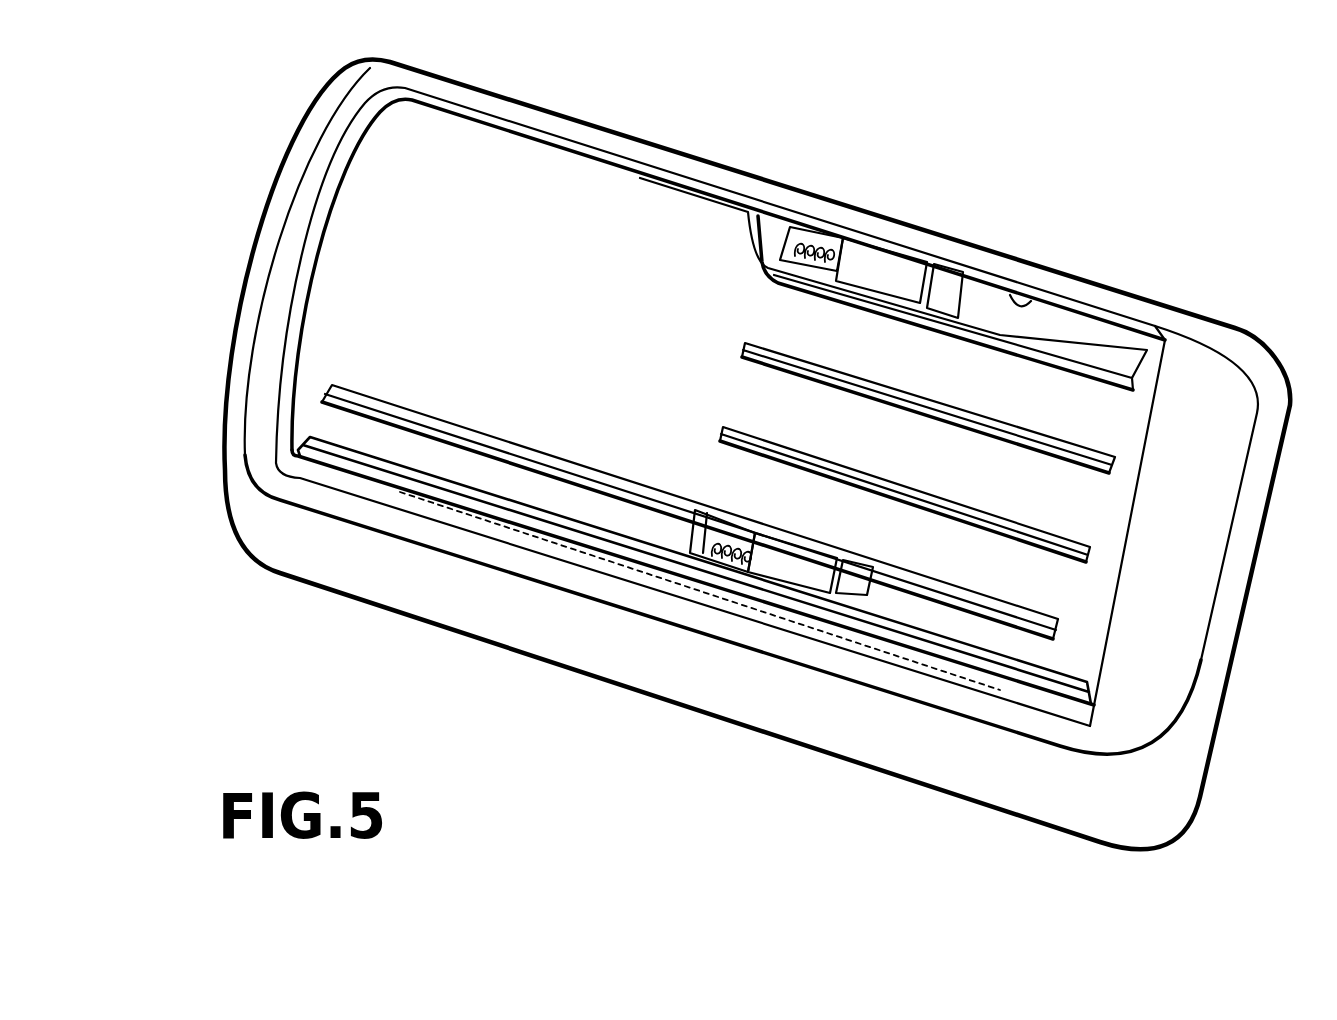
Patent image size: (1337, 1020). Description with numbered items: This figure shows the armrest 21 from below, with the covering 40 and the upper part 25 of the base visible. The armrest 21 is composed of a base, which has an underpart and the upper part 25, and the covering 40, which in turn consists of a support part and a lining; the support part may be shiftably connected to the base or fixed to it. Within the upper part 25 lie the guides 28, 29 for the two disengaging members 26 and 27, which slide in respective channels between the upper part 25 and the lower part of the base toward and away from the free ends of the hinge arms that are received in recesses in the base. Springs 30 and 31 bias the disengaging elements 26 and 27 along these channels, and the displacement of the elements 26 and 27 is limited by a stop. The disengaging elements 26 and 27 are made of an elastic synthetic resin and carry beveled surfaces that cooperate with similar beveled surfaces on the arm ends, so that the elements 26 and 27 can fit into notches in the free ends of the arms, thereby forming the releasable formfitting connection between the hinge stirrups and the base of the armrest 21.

The armrest 21 is at (1023, 184).
The upper part 25 is at (1070, 407).
The disengaging member 26 is at (793, 572).
The disengaging member 27 is at (888, 277).
The guide 28 is at (870, 596).
The guide 29 is at (1032, 311).
The spring 30 is at (723, 553).
The spring 31 is at (818, 243).
The covering 40 is at (527, 639).